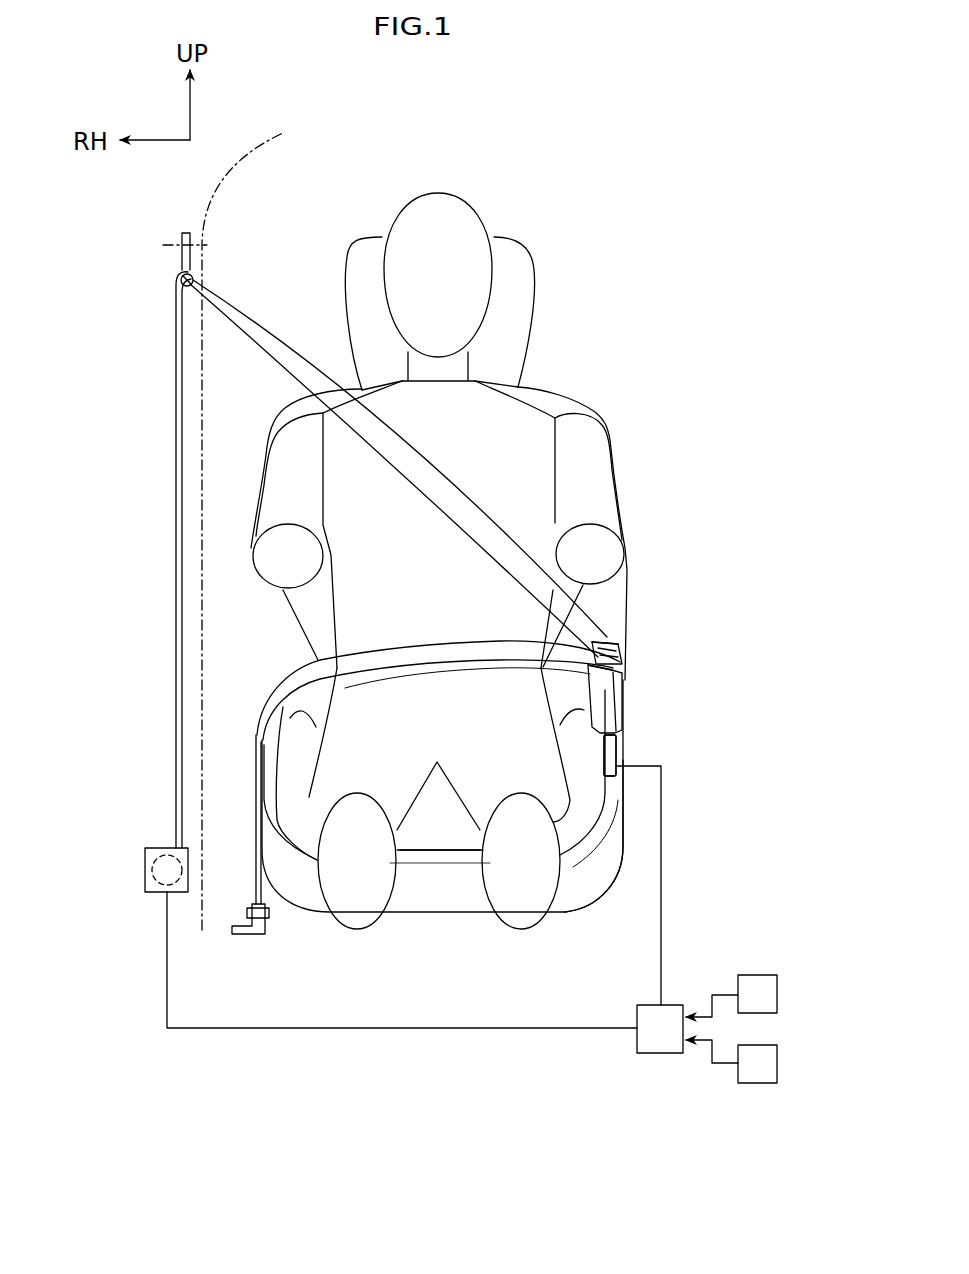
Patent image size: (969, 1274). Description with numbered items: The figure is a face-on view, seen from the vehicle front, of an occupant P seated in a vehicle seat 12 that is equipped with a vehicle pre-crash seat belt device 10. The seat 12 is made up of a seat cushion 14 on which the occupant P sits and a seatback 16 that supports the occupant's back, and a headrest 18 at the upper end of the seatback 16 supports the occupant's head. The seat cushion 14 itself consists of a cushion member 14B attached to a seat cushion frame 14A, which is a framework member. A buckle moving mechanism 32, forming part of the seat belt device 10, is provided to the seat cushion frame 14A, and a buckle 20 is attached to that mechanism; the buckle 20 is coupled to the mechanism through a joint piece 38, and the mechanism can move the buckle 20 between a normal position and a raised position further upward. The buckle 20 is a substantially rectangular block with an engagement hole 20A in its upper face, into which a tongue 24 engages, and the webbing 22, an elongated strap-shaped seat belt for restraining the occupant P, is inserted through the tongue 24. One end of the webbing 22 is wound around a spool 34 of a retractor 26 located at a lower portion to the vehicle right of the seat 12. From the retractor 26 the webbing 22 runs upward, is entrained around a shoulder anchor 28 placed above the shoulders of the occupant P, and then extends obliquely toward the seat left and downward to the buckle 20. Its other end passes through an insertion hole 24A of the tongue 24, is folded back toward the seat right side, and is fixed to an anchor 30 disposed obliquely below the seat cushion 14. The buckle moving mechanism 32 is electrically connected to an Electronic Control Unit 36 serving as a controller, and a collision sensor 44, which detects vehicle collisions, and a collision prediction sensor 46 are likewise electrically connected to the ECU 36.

The vehicle pre-crash seat belt device 10 is at (434, 629).
The vehicle seat 12 is at (481, 627).
The seat cushion 14 is at (452, 852).
The seat cushion frame 14A is at (595, 893).
The cushion member 14B is at (443, 855).
The seatback 16 is at (612, 418).
The headrest 18 is at (540, 246).
The buckle 20 is at (669, 690).
The engagement hole 20A is at (618, 666).
The webbing 22 is at (264, 323).
The tongue 24 is at (622, 645).
The insertion hole 24A is at (614, 641).
The retractor 26 is at (343, 937).
The shoulder anchor 28 is at (184, 240).
The anchor 30 is at (243, 937).
The buckle moving mechanism 32 is at (610, 755).
The spool 34 is at (160, 893).
The Electronic Control Unit (ECU) 36 is at (671, 1005).
The joint piece 38 is at (616, 752).
The collision sensor 44 is at (772, 975).
The collision prediction sensor 46 is at (772, 1045).
The occupant P is at (458, 196).